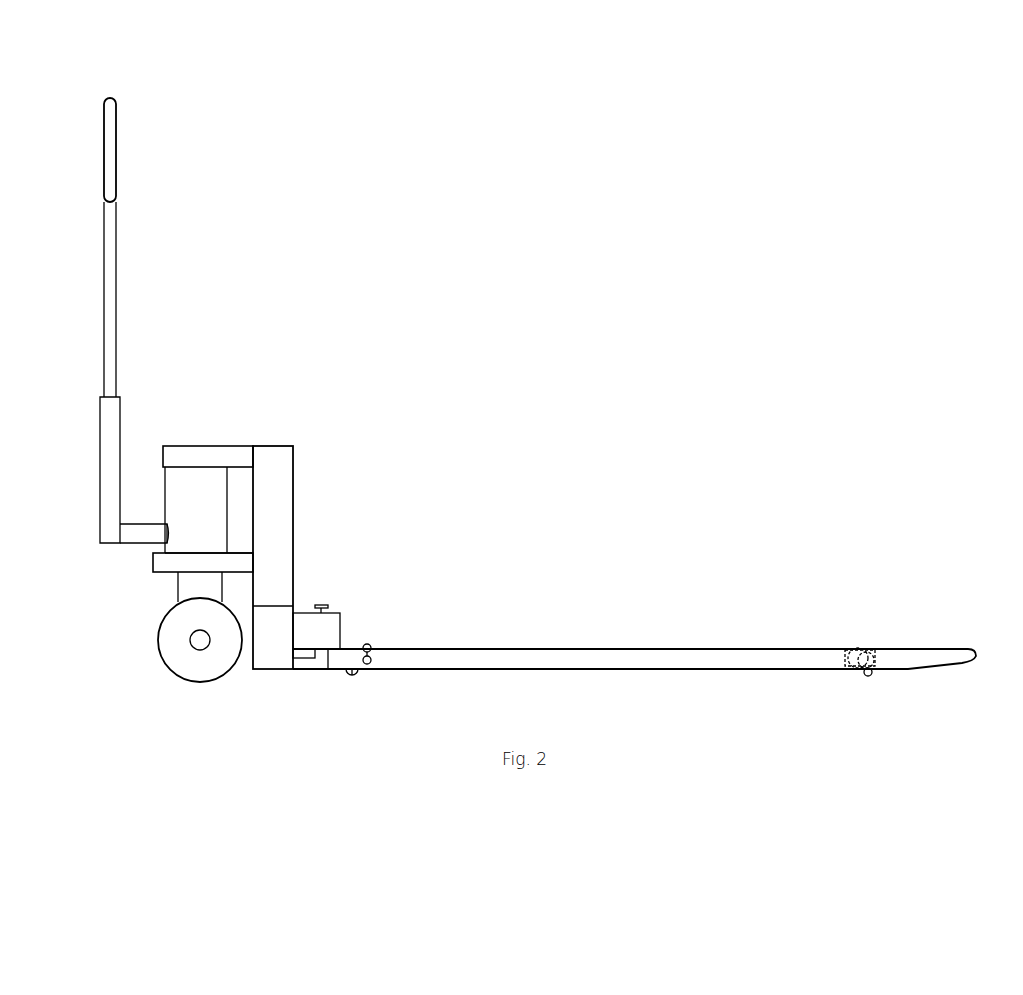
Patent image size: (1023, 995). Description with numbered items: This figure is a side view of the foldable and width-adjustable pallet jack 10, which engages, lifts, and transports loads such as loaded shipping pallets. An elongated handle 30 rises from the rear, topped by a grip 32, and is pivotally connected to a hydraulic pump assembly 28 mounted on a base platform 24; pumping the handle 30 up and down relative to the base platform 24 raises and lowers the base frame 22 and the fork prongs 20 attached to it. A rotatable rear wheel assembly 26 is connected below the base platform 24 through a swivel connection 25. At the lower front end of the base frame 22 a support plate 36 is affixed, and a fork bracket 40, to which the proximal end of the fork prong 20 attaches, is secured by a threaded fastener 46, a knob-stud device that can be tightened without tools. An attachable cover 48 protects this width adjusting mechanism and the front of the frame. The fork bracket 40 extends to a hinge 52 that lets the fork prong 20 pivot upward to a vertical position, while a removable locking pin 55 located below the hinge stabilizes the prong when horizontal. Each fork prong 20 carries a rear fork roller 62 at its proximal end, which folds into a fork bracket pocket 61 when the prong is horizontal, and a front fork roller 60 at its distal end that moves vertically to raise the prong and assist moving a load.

The foldable pallet jack 10 is at (922, 125).
The fork prong 20 is at (432, 650).
The base frame 22 is at (276, 463).
The base platform 24 is at (160, 565).
The swivel connection 25 is at (188, 583).
The rear wheel assembly 26 is at (170, 654).
The hydraulic pump assembly 28 is at (182, 488).
The handle 30 is at (118, 252).
The grip 32 is at (110, 178).
The support plate 36 is at (310, 663).
The fork bracket 40 is at (343, 657).
The threaded fastener 46 is at (325, 604).
The cover 48 is at (342, 625).
The hinge 52 is at (372, 647).
The locking pin 55 is at (370, 665).
The front fork roller 60 is at (870, 675).
The fork bracket pocket 61 is at (868, 656).
The rear fork roller 62 is at (351, 678).